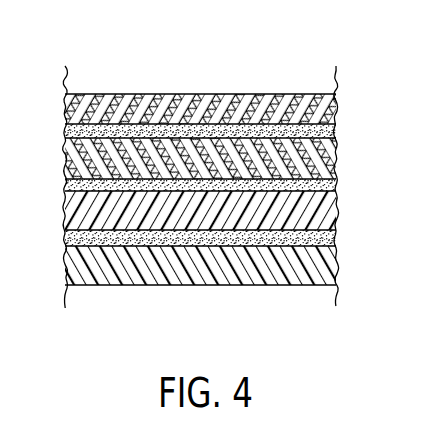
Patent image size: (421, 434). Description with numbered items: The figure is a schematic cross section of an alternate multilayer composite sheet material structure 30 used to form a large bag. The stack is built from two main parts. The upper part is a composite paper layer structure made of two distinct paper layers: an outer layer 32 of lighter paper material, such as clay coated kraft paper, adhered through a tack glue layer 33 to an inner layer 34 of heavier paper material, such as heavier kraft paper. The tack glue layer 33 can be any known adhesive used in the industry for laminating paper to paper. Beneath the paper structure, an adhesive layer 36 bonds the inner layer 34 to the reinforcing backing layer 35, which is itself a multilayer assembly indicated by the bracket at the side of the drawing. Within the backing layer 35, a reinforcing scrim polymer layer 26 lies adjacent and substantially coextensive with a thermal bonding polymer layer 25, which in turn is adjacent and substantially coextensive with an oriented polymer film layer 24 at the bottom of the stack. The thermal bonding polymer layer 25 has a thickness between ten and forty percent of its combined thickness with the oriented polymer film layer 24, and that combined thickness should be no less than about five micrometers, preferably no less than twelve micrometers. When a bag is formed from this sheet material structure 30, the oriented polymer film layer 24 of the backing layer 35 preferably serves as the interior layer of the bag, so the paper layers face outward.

The composite sheet material structure 30 is at (192, 66).
The outer layer 32 is at (333, 104).
The tack glue layer 33 is at (337, 130).
The inner layer 34 is at (333, 158).
The adhesive layer 36 is at (335, 188).
The reinforcing backing layer 35 is at (52, 192).
The reinforcing scrim polymer layer 26 is at (327, 210).
The thermal bonding polymer layer 25 is at (333, 238).
The oriented polymer film layer 24 is at (327, 270).